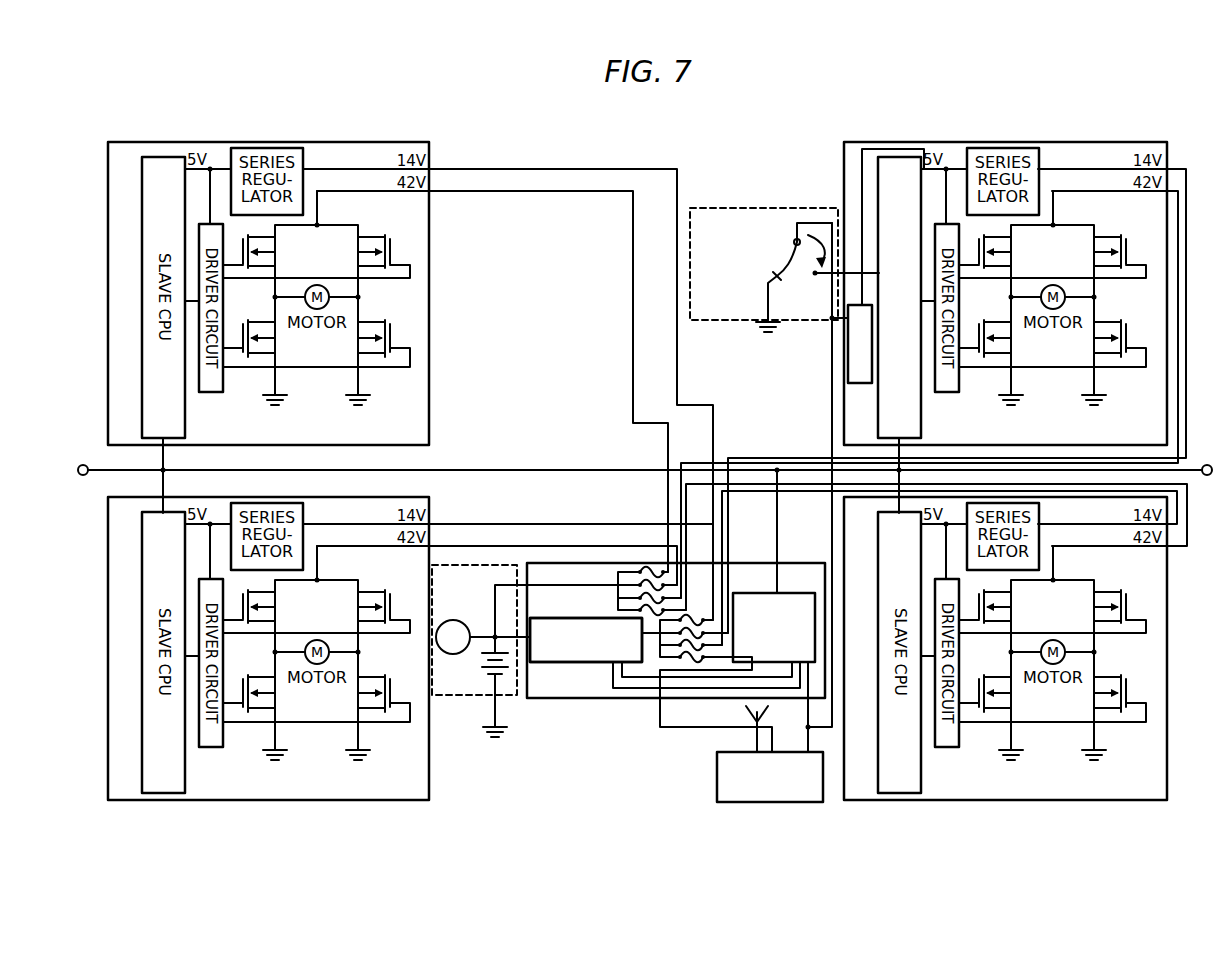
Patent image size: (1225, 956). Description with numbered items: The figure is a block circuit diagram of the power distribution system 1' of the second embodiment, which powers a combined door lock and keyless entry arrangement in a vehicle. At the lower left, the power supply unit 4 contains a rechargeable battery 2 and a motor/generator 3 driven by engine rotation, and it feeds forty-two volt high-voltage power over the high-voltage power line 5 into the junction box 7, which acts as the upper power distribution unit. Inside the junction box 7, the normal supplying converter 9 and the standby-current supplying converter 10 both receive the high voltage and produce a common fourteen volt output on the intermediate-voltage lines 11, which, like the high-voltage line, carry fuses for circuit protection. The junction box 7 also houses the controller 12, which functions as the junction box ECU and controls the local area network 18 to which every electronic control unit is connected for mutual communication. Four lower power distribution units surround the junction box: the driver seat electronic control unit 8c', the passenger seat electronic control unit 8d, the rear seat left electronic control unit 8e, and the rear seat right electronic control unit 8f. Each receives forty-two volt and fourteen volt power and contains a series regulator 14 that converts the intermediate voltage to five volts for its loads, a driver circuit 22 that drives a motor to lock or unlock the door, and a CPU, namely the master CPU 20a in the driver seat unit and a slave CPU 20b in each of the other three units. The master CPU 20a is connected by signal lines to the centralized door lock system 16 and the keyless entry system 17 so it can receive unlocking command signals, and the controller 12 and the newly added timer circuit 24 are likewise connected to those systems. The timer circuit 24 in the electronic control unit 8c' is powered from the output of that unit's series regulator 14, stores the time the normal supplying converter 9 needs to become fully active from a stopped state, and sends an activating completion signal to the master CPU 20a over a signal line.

The power distribution system 1' is at (627, 479).
The rechargeable battery 2 is at (490, 680).
The motor/generator 3 is at (455, 620).
The power supply unit 4 is at (440, 698).
The high-voltage power line 5 is at (493, 606).
The junction box 7 is at (545, 698).
The normal supplying converter 9 is at (586, 640).
The standby-current supplying converter 10 is at (586, 640).
The intermediate-voltage line 11 is at (658, 662).
The controller 12 is at (797, 593).
The series regulator 14 is at (231, 148).
The centralized door lock system 16 is at (797, 208).
The keyless entry system 17 is at (745, 803).
The local area network 18 is at (123, 470).
The master CPU 20a is at (935, 300).
The slave CPU 20b is at (142, 378).
The driver circuit 22 is at (212, 392).
The timer circuit 24 is at (854, 373).
The electronic control unit 8c' is at (991, 275).
The electronic control unit 8d is at (275, 142).
The electronic control unit 8e is at (268, 670).
The electronic control unit 8f is at (1005, 670).